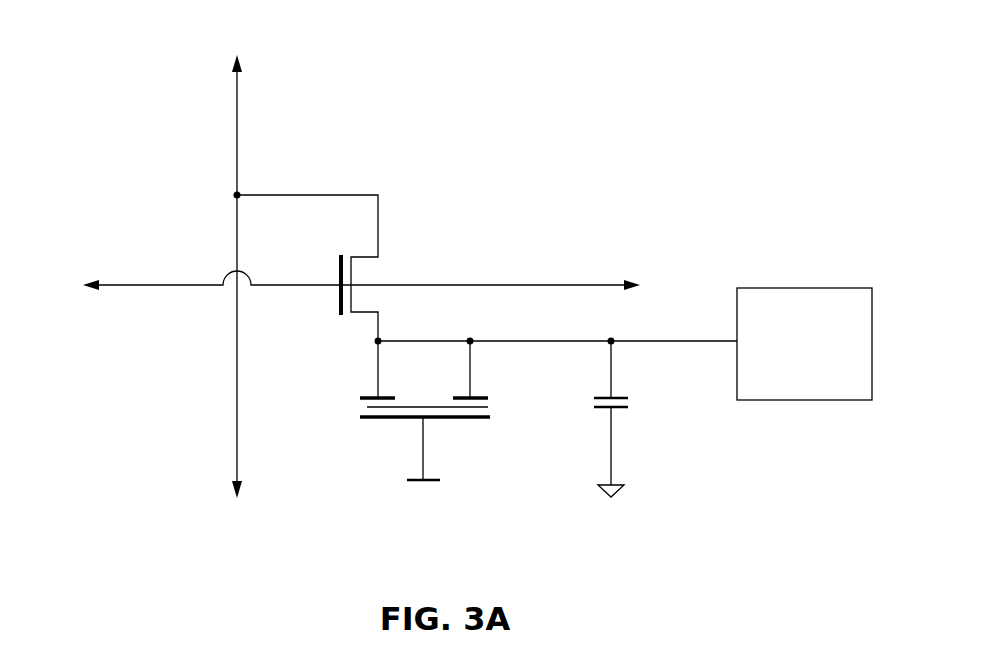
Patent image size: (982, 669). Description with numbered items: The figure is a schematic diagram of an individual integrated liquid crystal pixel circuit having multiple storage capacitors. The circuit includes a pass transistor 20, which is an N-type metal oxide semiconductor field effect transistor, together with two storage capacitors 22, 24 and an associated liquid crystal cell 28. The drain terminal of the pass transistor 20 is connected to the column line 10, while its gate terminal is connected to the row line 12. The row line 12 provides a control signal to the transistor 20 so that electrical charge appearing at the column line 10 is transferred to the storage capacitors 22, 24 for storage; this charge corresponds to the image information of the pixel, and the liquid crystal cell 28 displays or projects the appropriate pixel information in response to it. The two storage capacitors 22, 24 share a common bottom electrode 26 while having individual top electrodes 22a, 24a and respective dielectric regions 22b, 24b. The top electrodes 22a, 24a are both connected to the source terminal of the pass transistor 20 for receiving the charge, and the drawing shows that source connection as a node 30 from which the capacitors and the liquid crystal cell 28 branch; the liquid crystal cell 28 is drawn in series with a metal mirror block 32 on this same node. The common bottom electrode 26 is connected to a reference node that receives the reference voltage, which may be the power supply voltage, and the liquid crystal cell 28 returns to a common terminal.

The column line 10 is at (237, 122).
The row line 12 is at (152, 281).
The pass transistor 20 is at (353, 267).
The storage capacitor 22 is at (377, 405).
The top electrode 22a is at (391, 397).
The dielectric region 22b is at (362, 408).
The storage capacitor 24 is at (506, 385).
The top electrode 24a is at (462, 397).
The dielectric region 24b is at (475, 409).
The common electrode 26 is at (395, 419).
The liquid crystal cell 28 is at (685, 388).
The node 30 is at (421, 340).
The metal mirror 32 is at (828, 300).